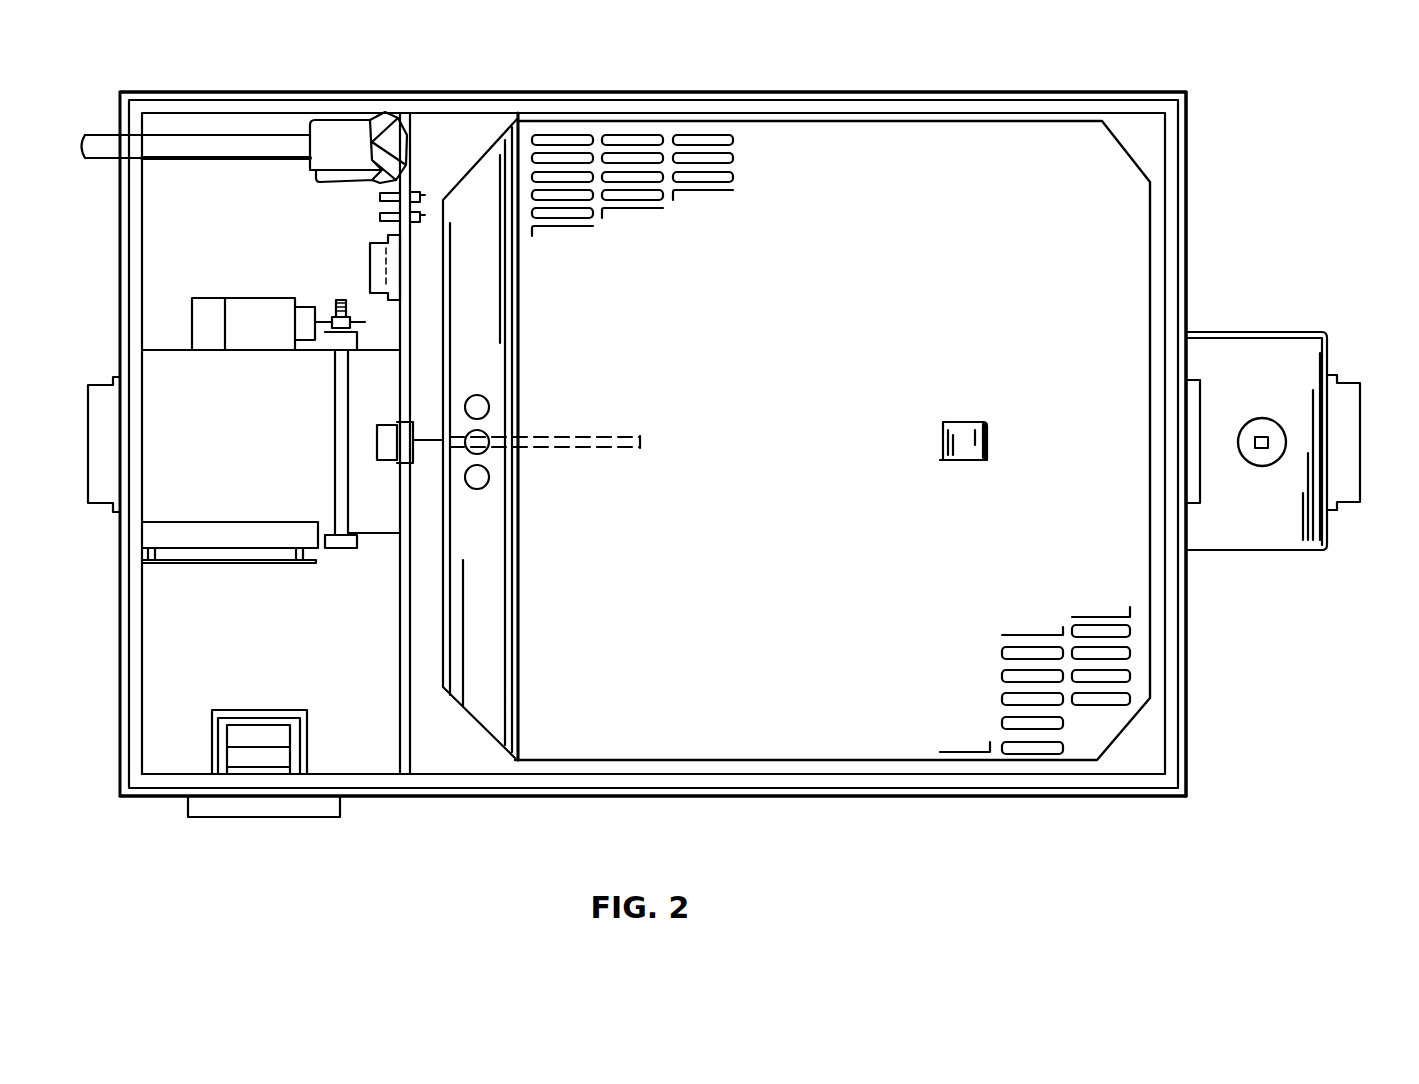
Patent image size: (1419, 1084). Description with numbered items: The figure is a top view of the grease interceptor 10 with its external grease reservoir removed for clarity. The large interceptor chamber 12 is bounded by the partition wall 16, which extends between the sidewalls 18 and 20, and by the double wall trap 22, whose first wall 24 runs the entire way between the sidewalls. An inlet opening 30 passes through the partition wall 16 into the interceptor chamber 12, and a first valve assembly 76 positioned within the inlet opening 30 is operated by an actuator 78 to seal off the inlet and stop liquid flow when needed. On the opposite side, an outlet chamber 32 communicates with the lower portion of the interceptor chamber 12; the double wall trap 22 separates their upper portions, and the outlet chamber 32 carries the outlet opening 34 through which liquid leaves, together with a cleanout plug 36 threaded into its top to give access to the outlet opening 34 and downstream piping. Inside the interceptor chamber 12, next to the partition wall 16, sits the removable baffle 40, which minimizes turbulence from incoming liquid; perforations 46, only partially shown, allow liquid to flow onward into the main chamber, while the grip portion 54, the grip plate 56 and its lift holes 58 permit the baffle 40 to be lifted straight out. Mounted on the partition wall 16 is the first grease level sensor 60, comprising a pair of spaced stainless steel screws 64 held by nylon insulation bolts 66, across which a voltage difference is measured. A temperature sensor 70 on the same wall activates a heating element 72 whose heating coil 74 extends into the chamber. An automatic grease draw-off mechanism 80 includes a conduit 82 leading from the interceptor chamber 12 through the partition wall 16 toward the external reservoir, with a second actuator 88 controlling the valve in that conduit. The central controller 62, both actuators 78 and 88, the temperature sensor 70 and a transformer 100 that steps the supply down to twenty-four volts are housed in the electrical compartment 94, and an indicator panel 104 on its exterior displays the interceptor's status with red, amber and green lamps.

The grease interceptor 10 is at (1250, 632).
The interceptor chamber 12 is at (757, 488).
The partition wall 16 is at (400, 592).
The sidewall 18 is at (850, 787).
The sidewall 20 is at (797, 98).
The double wall trap 22 is at (1210, 402).
The first wall 24 is at (1178, 282).
The inlet opening 30 is at (108, 380).
The outlet chamber 32 is at (1283, 556).
The outlet opening 34 is at (1345, 385).
The cleanout plug 36 is at (1265, 438).
The removable baffle 40 is at (485, 728).
The perforations 46 is at (733, 180).
The grip portion 54 is at (965, 428).
The grip plate 56 is at (515, 468).
The lift holes 58 is at (489, 412).
The first grease level sensor 60 is at (365, 190).
The central controller 62 is at (213, 540).
The stainless steel screws 64 is at (380, 217).
The nylon insulation bolts 66 is at (410, 217).
The temperature sensor 70 is at (370, 270).
The heating element 72 is at (380, 425).
The heating coil 74 is at (578, 437).
The first valve assembly 76 is at (335, 398).
The actuator 78 is at (241, 340).
The automatic grease draw-off mechanism 80 is at (237, 165).
The conduit 82 is at (172, 163).
The second actuator 88 is at (356, 142).
The electrical compartment 94 is at (243, 661).
The transformer 100 is at (298, 742).
The indicator panel 104 is at (340, 805).